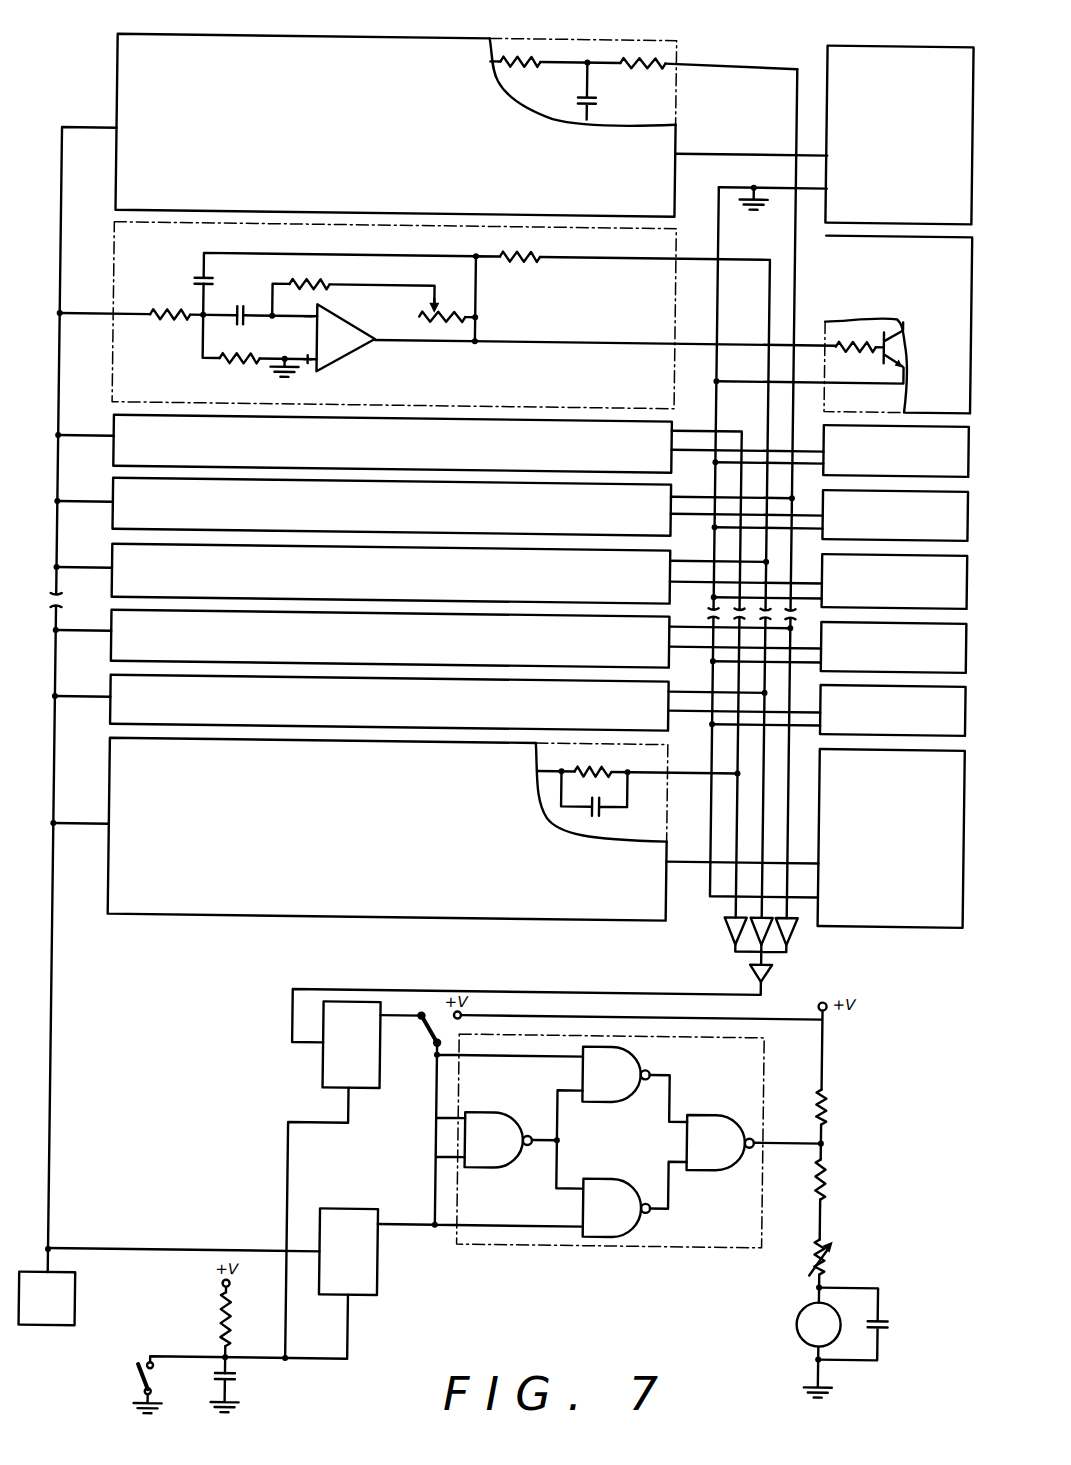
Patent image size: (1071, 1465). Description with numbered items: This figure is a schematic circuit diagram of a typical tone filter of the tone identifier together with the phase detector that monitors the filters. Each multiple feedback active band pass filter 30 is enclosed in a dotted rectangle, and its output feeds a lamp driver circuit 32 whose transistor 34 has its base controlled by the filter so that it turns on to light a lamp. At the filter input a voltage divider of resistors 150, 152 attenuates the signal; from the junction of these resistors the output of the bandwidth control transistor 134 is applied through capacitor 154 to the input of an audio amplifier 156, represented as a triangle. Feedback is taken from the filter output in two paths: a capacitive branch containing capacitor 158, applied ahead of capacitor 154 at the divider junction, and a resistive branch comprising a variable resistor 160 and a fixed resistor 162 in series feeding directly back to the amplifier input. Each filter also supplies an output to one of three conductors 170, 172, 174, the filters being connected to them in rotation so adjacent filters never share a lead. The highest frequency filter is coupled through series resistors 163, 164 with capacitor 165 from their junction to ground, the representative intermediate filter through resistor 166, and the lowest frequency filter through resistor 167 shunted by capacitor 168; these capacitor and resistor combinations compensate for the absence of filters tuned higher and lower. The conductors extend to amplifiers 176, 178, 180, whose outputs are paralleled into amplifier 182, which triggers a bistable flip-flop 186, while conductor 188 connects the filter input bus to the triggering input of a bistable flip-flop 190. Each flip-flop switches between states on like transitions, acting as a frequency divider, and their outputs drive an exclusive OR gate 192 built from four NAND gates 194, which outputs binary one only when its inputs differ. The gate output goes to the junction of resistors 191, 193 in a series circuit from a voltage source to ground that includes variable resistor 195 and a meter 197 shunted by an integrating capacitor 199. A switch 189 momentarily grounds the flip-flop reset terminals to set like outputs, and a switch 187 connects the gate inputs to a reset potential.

The filter 30 is at (386, 841).
The lamp driver circuit 32 is at (898, 842).
The transistor 34 is at (870, 352).
The bandwidth control transistor 134 is at (82, 1299).
The resistor 150 is at (168, 324).
The resistor 152 is at (228, 367).
The capacitor 154 is at (247, 300).
The audio amplifier 156 is at (352, 354).
The capacitor 158 is at (194, 283).
The variable resistor 160 is at (422, 321).
The fixed resistor 162 is at (306, 284).
The resistor 163 is at (512, 66).
The resistor 164 is at (633, 67).
The capacitor 165 is at (588, 101).
The resistor 166 is at (516, 263).
The resistor 167 is at (591, 768).
The capacitor 168 is at (603, 809).
The conductor 170 is at (768, 68).
The conductor 172 is at (760, 297).
The conductor 174 is at (706, 426).
The amplifier 176 is at (800, 935).
The amplifier 178 is at (750, 935).
The amplifier 180 is at (725, 923).
The amplifier 182 is at (778, 980).
The bistable flip-flop 186 is at (322, 1072).
The switch 187 is at (432, 1031).
The conductor 188 is at (208, 1252).
The switch 189 is at (145, 1381).
The bistable flip-flop 190 is at (386, 1284).
The resistor 191 is at (832, 1104).
The exclusive OR gate 192 is at (634, 1254).
The resistor 193 is at (833, 1176).
The NAND gate 194 is at (650, 1064).
The variable resistor 195 is at (836, 1255).
The meter 197 is at (803, 1321).
The integrating capacitor 199 is at (895, 1321).